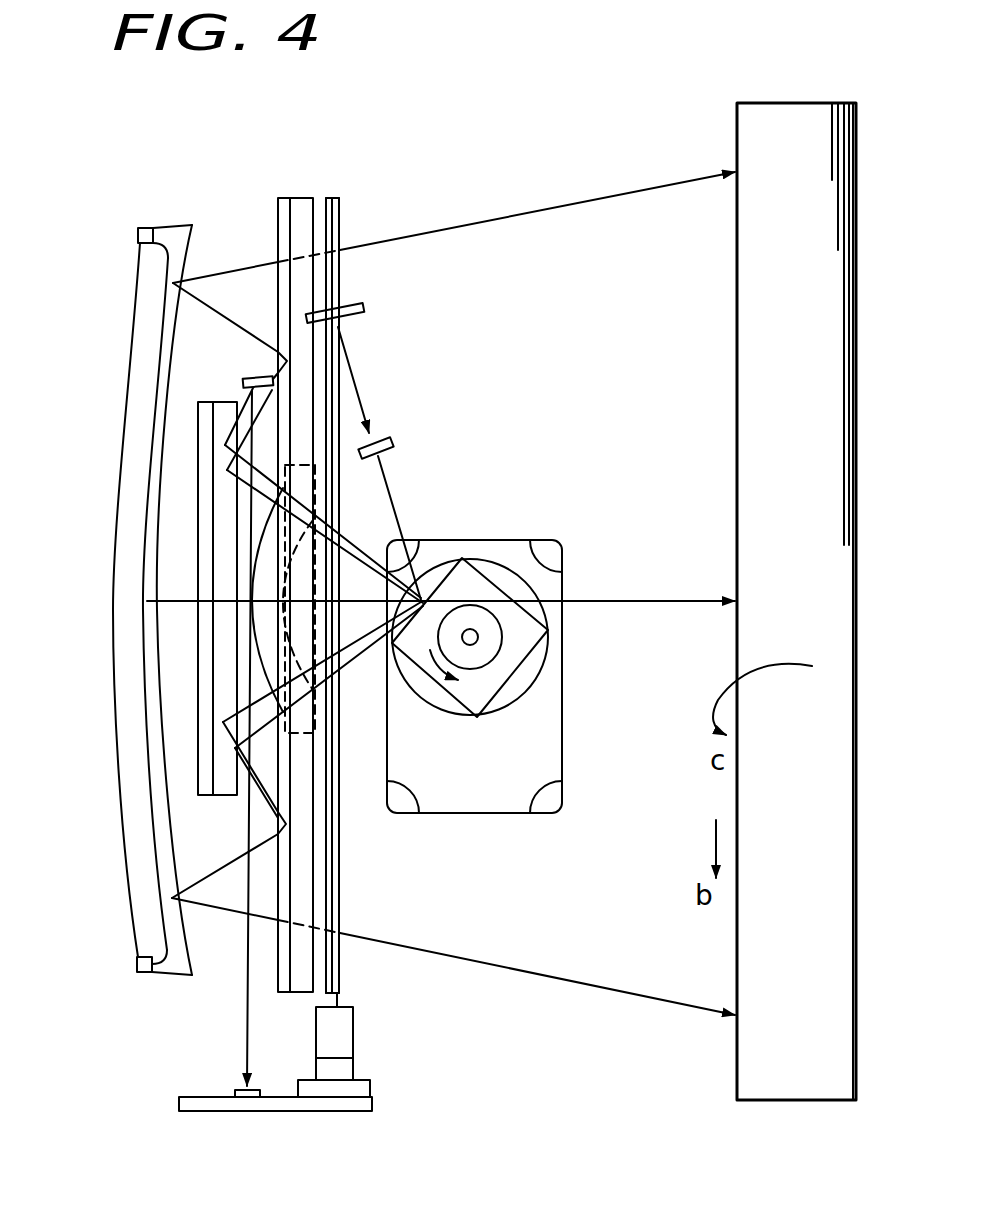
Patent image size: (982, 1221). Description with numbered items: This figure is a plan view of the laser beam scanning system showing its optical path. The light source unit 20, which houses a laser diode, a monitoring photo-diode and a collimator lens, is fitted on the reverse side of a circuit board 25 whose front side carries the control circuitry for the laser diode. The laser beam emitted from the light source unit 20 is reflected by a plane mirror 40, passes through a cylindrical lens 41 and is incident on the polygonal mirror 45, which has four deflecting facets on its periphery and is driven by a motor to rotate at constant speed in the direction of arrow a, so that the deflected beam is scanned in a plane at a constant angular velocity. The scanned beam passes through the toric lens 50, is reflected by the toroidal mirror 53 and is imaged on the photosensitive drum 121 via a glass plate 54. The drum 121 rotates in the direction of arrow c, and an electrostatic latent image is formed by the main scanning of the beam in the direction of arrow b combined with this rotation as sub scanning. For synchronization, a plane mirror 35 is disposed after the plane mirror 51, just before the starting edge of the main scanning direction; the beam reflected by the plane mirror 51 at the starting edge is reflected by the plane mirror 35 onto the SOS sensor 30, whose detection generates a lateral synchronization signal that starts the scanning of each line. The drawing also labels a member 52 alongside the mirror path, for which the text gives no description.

The light source unit 20 is at (356, 1033).
The circuit board 25 is at (282, 1111).
The photosensor (SOS sensor) 30 is at (236, 1092).
The plane mirror 35 is at (255, 376).
The plane mirror 40 is at (362, 318).
The cylindrical lens 41 is at (388, 455).
The polygonal mirror 45 is at (470, 582).
The toric lens 50 is at (265, 563).
The plane mirror 51 is at (222, 500).
The reflecting mirror 52 is at (279, 237).
The toroidal mirror 53 is at (160, 382).
The glass plate 54 is at (341, 237).
The photosensitive drum 121 is at (737, 443).